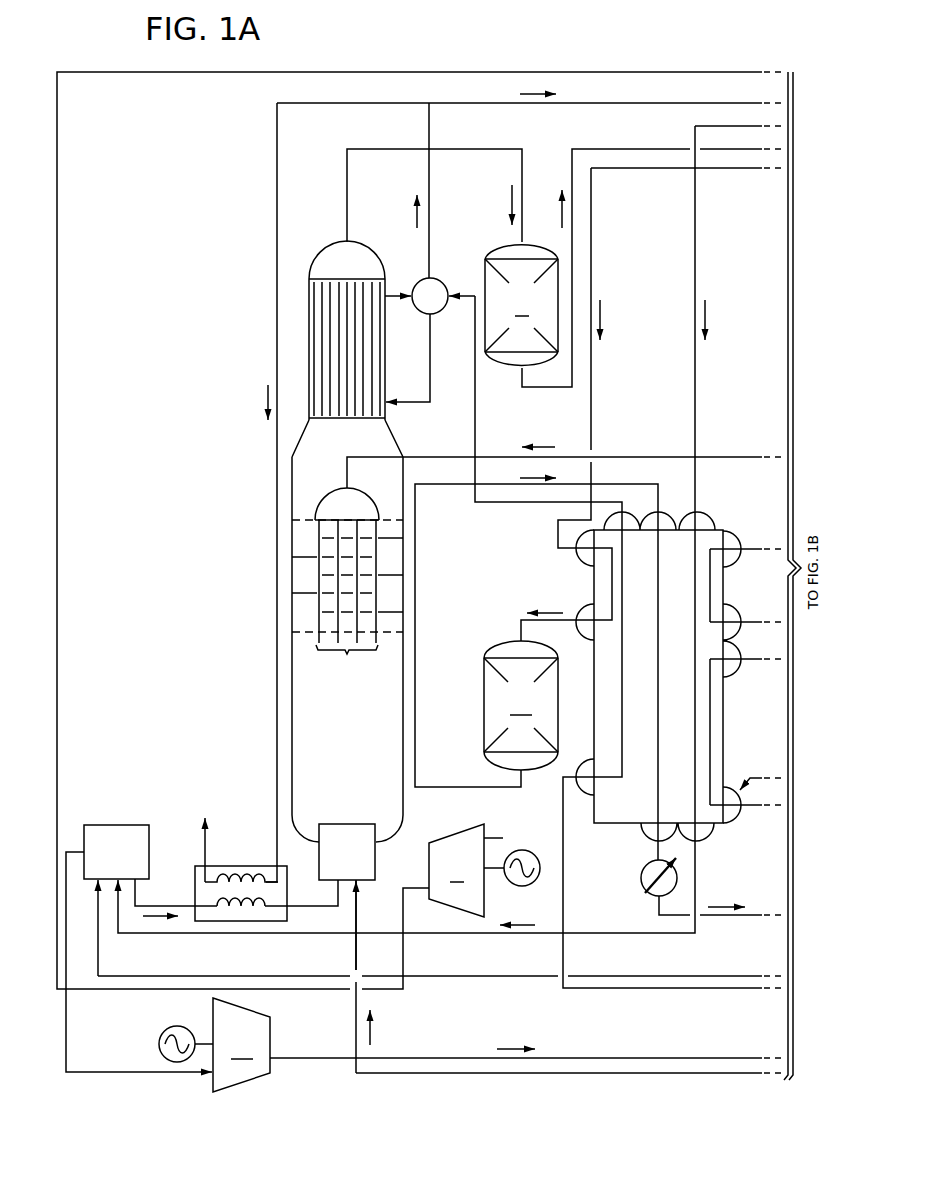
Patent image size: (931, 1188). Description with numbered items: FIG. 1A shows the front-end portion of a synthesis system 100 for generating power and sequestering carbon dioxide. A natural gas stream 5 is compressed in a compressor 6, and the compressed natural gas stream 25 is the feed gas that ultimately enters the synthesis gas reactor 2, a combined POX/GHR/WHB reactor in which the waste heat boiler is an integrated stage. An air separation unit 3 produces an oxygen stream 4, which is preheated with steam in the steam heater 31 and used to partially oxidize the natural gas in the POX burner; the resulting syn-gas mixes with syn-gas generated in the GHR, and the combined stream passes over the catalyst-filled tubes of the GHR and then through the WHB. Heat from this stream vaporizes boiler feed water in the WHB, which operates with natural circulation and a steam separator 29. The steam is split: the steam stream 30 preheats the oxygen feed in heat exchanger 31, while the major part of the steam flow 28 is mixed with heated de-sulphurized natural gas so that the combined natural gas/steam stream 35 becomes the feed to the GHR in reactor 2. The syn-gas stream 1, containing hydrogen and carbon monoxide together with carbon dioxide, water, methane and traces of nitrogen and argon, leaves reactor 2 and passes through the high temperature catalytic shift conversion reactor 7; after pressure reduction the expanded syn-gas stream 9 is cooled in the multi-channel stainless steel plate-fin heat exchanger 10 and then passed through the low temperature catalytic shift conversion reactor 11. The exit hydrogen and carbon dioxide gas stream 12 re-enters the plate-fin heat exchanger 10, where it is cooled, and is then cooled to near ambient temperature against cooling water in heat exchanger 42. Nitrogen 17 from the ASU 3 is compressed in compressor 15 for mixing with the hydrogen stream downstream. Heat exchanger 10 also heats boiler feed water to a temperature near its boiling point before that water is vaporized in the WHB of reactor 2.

The synthesis system 100 is at (652, 44).
The syn-gas stream 1 is at (522, 178).
The synthesis gas reactor 2 is at (340, 775).
The air separation unit 3 is at (110, 825).
The oxygen stream 4 is at (178, 906).
The natural gas stream 5 is at (356, 1003).
The compressor 6 is at (484, 870).
The high temperature catalytic shift conversion reactor 7 is at (623, 268).
The expanded syn-gas stream 9 is at (592, 283).
The plate-fin heat exchanger 10 is at (612, 824).
The low temperature catalytic shift conversion reactor 11 is at (521, 705).
The exit gas stream 12 is at (415, 638).
The nitrogen compressor 15 is at (460, 1045).
The nitrogen stream 17 is at (67, 1017).
The compressed natural gas stream 25 is at (60, 541).
The steam stream 28 is at (525, 105).
The steam separator 29 is at (426, 280).
The steam stream 30 is at (277, 550).
The steam heater 31 is at (243, 866).
The combined natural gas/steam stream 35 is at (453, 457).
The heat exchanger 42 is at (641, 880).